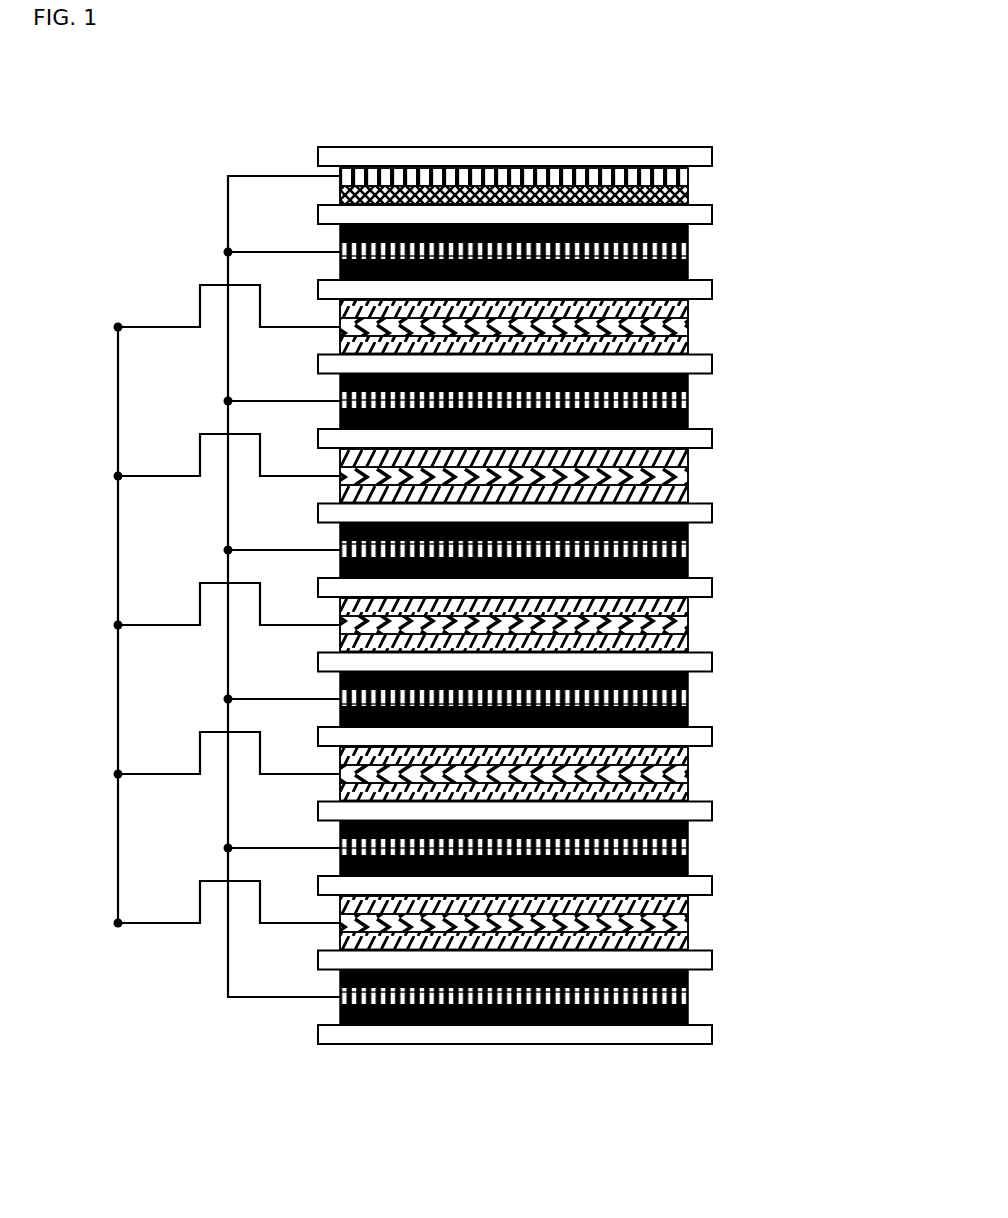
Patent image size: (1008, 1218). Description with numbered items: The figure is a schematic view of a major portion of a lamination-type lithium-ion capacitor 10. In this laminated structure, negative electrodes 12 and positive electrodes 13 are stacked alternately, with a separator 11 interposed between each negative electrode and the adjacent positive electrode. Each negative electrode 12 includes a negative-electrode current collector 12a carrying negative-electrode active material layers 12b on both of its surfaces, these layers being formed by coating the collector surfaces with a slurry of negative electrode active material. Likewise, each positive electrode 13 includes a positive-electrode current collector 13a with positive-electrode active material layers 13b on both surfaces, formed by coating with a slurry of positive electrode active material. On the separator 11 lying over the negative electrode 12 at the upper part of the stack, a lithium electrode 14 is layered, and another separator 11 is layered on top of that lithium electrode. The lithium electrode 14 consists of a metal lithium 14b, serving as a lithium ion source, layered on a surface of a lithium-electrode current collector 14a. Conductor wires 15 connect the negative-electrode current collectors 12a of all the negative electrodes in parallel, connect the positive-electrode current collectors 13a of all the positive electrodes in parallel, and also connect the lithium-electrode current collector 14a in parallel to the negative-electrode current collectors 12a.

The lamination-type lithium-ion capacitor 10 is at (730, 124).
The separator 11 is at (712, 157).
The negative electrode 12 is at (818, 982).
The negative-electrode current collector 12a is at (688, 252).
The negative-electrode active material layer 12b is at (688, 234).
The positive electrode 13 is at (846, 890).
The positive-electrode current collector 13a is at (688, 327).
The positive-electrode active material layer 13b is at (688, 307).
The lithium electrode 14 is at (843, 140).
The lithium-electrode current collector 14a is at (688, 178).
The metal lithium 14b is at (688, 195).
The conductor wire 15 is at (116, 540).